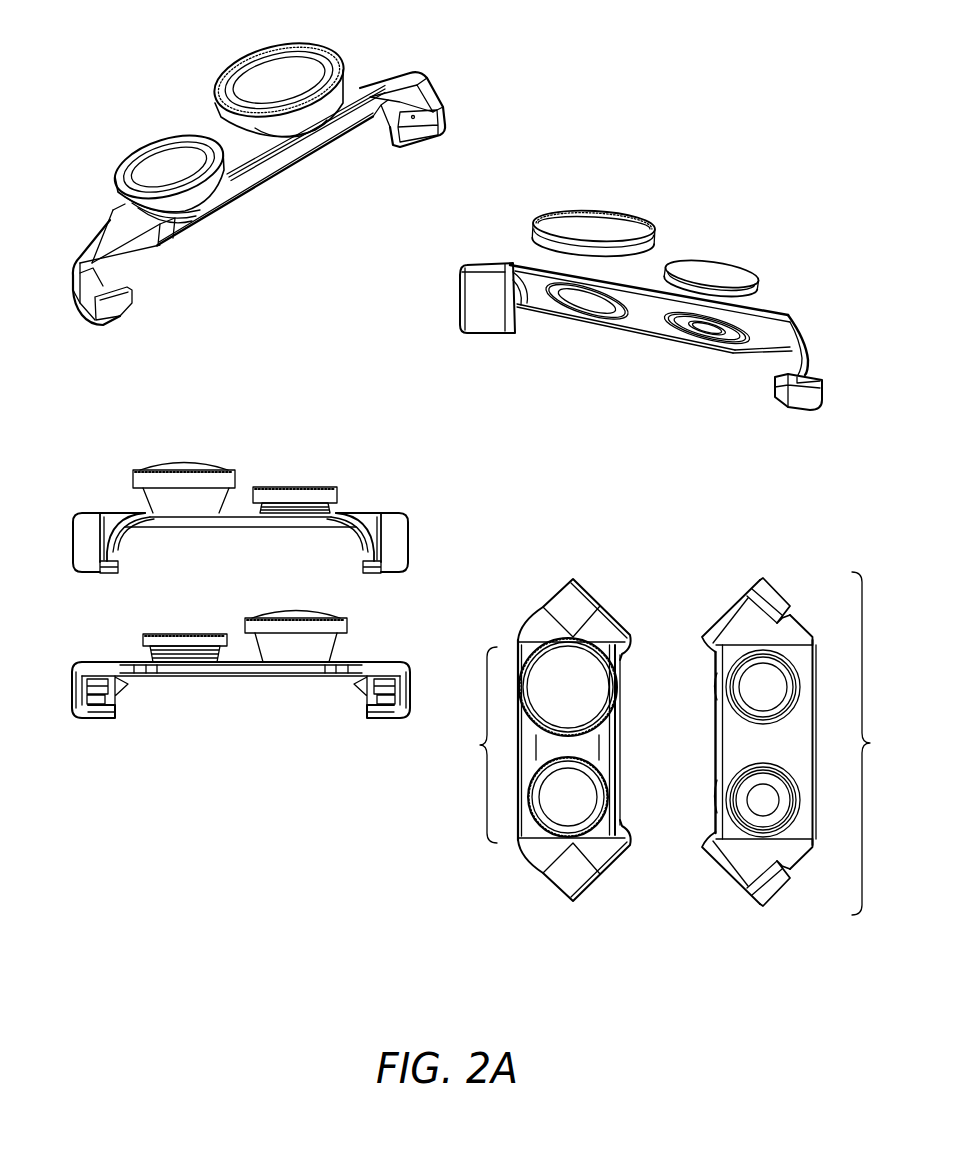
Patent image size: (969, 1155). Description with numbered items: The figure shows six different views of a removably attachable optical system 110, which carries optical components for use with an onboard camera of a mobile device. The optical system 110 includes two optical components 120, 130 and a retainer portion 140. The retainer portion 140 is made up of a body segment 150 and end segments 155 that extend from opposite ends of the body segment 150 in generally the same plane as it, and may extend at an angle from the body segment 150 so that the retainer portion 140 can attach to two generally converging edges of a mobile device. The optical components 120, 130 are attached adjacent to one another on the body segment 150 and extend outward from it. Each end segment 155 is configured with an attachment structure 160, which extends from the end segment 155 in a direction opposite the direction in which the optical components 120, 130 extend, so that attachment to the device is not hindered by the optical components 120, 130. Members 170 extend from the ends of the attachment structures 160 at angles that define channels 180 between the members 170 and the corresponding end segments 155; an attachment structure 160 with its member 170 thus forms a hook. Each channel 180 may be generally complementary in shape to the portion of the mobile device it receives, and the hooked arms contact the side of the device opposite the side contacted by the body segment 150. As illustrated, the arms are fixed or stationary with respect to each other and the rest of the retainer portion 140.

The removably attachable optical system 110 is at (197, 112).
The optical component 120 is at (310, 63).
The optical component 130 is at (143, 173).
The retainer portion 140 is at (268, 188).
The body segment 150 is at (535, 740).
The end segment 155 is at (110, 237).
The attachment structure 160 is at (78, 300).
The member 170 is at (113, 318).
The channel 180 is at (133, 280).